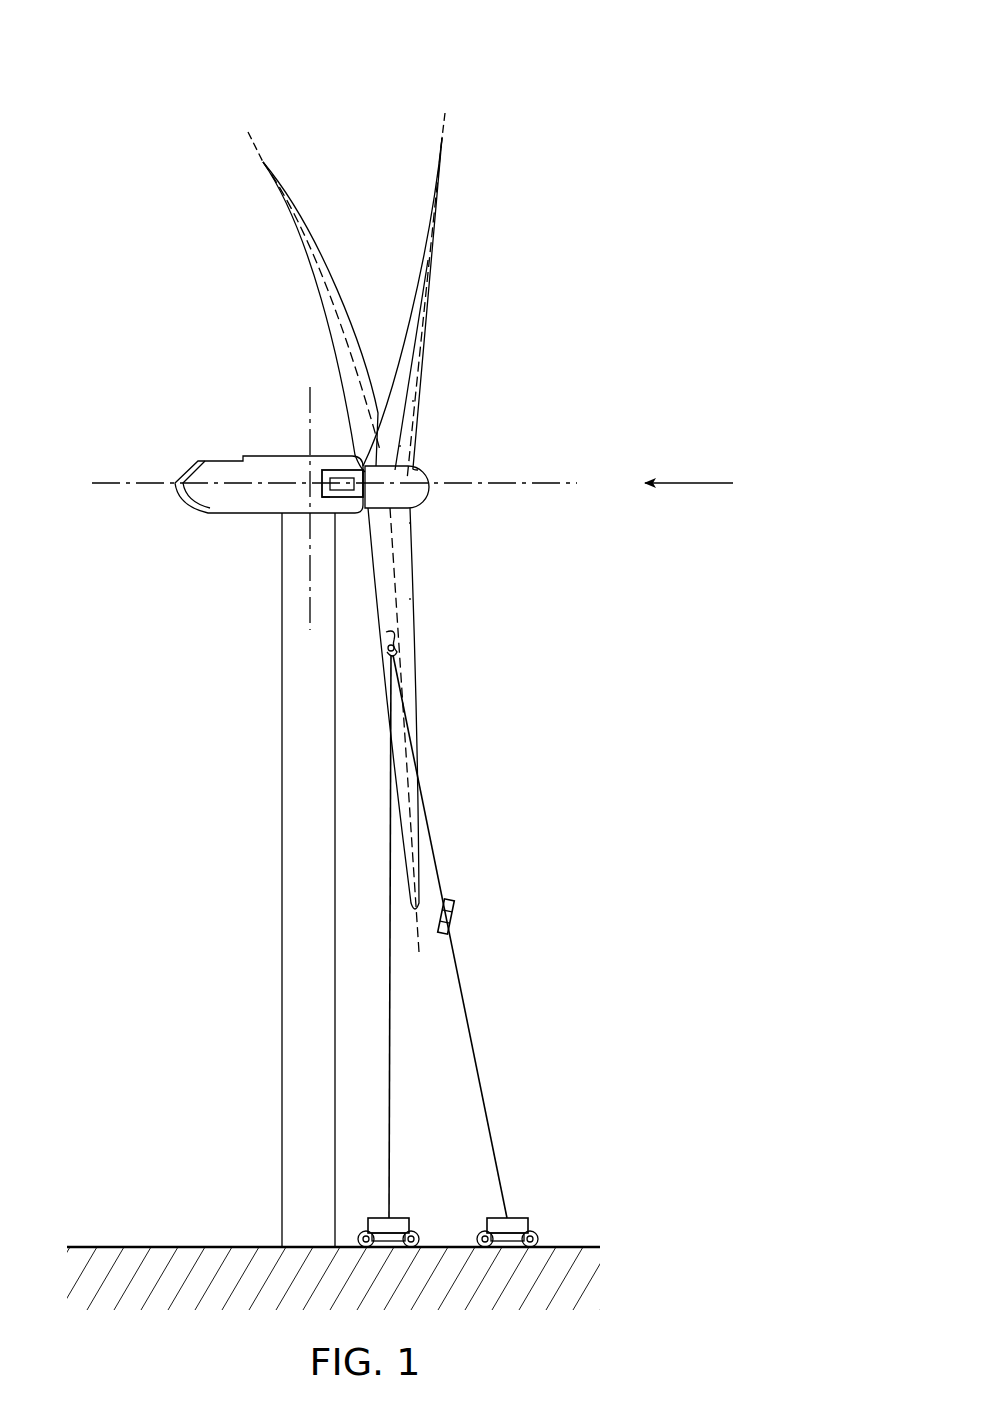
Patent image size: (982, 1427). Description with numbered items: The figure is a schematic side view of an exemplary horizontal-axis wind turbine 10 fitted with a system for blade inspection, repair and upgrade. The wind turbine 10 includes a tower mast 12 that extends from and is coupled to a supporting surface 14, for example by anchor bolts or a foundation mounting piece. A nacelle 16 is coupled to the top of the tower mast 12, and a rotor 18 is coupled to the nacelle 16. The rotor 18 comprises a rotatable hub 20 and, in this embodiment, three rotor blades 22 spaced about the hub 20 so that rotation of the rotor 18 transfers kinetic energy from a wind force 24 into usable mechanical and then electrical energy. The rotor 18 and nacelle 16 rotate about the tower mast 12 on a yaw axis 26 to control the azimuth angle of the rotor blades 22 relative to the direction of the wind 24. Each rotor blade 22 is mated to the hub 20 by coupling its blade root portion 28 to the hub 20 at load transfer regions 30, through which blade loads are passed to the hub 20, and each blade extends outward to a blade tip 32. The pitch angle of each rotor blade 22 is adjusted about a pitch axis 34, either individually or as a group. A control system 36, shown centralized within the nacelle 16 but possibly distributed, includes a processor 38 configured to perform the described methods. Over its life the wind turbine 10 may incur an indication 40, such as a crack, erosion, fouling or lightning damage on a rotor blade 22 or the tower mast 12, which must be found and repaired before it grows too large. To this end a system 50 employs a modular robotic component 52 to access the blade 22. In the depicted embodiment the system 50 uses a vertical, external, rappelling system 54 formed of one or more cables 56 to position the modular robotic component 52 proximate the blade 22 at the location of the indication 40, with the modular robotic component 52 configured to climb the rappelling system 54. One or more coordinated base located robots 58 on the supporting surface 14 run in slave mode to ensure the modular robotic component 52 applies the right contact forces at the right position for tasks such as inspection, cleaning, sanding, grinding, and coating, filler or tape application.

The wind turbine 10 is at (474, 68).
The tower mast 12 is at (281, 1100).
The supporting surface 14 is at (190, 1245).
The nacelle 16 is at (212, 514).
The rotor 18 is at (430, 333).
The rotatable hub 20 is at (431, 471).
The rotor blade 22 is at (284, 200).
The wind force 24 is at (692, 481).
The yaw axis 26 is at (306, 396).
The blade root portion 28 is at (414, 400).
The load transfer region 30 is at (401, 445).
The blade tip 32 is at (549, 481).
The pitch axis 34 is at (246, 134).
The control system 36 is at (331, 498).
The processor 38 is at (343, 468).
The indication 40 is at (392, 652).
The system 50 is at (541, 1100).
The modular robotic component 52 is at (458, 926).
The vertical, external, rappelling system 54 is at (487, 936).
The cable 56 is at (463, 995).
The base located robot 58 is at (400, 1217).